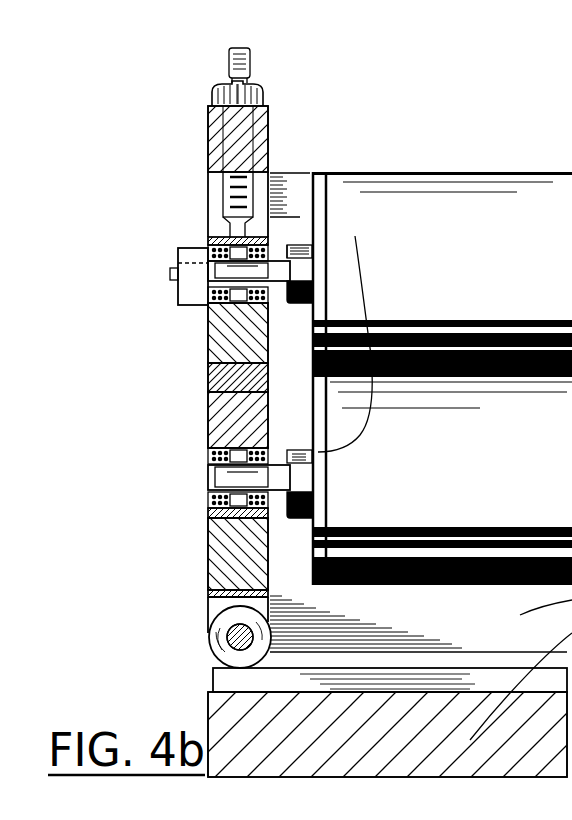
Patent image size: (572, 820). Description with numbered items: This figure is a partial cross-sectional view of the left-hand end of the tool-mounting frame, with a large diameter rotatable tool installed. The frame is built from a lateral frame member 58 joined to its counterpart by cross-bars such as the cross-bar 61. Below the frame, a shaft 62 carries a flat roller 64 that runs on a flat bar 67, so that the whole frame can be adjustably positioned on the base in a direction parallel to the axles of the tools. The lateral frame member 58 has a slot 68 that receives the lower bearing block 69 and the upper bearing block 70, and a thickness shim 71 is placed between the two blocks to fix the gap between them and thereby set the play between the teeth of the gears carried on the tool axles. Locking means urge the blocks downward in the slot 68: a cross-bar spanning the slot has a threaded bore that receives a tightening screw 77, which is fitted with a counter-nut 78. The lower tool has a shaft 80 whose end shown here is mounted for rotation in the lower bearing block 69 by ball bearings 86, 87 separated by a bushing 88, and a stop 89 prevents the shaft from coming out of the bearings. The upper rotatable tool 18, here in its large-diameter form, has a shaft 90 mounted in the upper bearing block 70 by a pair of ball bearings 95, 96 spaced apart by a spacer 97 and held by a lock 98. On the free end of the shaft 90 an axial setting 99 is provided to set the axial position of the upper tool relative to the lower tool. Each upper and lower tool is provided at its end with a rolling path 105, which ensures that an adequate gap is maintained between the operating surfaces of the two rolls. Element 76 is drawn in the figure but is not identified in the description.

The upper rotatable tool 18 is at (571, 118).
The lateral frame member 58 is at (210, 590).
The cross-bar 61 is at (292, 183).
The shaft 62 is at (228, 643).
The flat roller 64 is at (218, 632).
The flat bar 67 is at (212, 715).
The slot 68 is at (210, 537).
The lower bearing block 69 is at (210, 403).
The upper bearing block 70 is at (214, 320).
The thickness shim 71 is at (210, 363).
The threaded member 76 is at (272, 127).
The tightening screw 77 is at (206, 192).
The counter-nut 78 is at (264, 90).
The shaft 80 is at (210, 560).
The ball bearing 86 is at (210, 444).
The ball bearing 87 is at (210, 534).
The bushing 88 is at (210, 431).
The stop 89 is at (210, 472).
The shaft 90 is at (277, 268).
The ball bearing 95 is at (256, 310).
The ball bearing 96 is at (250, 300).
The spacer 97 is at (252, 318).
The lock 98 is at (190, 307).
The axial setting 99 is at (200, 262).
The rolling path 105 is at (322, 267).